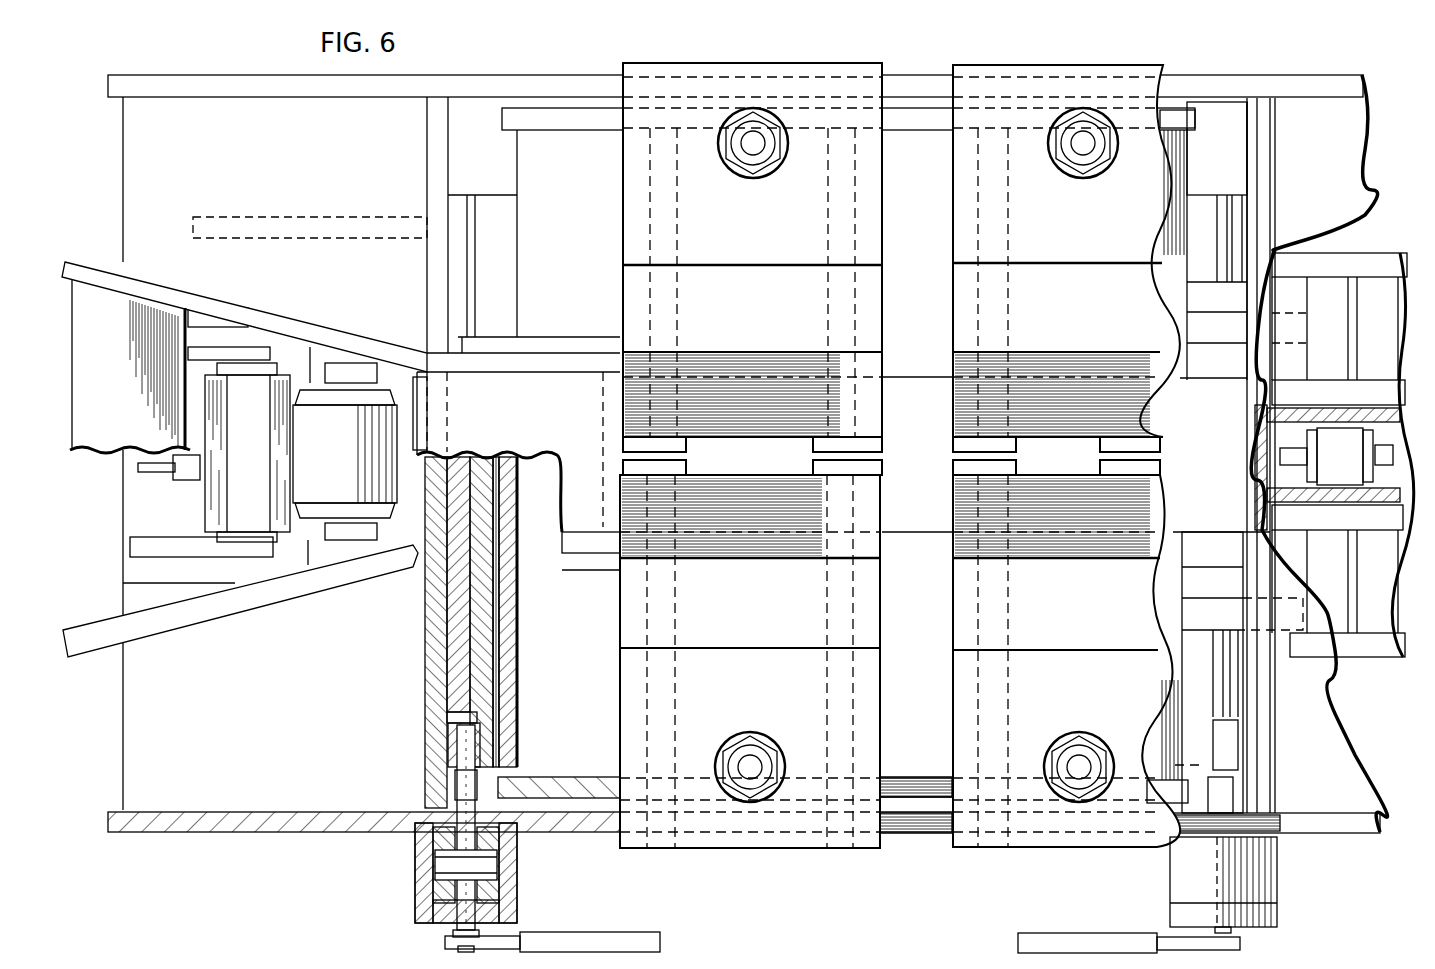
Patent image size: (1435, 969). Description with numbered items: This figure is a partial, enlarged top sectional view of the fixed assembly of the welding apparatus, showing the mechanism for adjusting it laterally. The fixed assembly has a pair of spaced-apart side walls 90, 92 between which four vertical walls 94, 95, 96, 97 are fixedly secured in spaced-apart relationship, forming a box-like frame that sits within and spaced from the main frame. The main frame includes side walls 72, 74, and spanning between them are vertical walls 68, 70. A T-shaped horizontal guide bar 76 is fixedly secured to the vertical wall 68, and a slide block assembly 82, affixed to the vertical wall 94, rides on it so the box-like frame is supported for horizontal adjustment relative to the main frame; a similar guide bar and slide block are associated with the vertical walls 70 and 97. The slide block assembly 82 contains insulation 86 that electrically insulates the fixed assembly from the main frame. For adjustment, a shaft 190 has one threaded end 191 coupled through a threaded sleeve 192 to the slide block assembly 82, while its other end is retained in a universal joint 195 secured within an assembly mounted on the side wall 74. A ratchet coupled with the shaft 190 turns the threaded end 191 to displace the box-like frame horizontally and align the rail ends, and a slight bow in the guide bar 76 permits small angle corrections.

The vertical wall 68 is at (432, 662).
The vertical wall 70 is at (1262, 753).
The side wall 72 is at (495, 78).
The side wall 74 is at (332, 825).
The T-shaped horizontal guide bar 76 is at (452, 597).
The slide block assembly 82 is at (486, 202).
The insulation 86 is at (500, 590).
The side wall 90 is at (912, 122).
The side wall 92 is at (905, 790).
The vertical wall 94 is at (657, 672).
The vertical wall 95 is at (848, 662).
The vertical wall 96 is at (988, 697).
The vertical wall 97 is at (1170, 680).
The shaft 190 is at (462, 785).
The threaded end 191 is at (470, 745).
The threaded sleeve 192 is at (447, 718).
The universal joint 195 is at (420, 860).